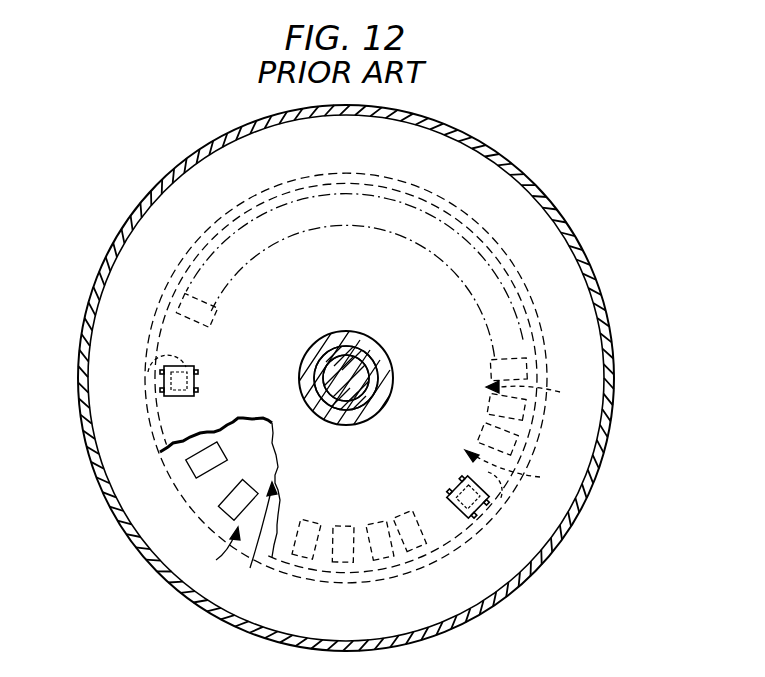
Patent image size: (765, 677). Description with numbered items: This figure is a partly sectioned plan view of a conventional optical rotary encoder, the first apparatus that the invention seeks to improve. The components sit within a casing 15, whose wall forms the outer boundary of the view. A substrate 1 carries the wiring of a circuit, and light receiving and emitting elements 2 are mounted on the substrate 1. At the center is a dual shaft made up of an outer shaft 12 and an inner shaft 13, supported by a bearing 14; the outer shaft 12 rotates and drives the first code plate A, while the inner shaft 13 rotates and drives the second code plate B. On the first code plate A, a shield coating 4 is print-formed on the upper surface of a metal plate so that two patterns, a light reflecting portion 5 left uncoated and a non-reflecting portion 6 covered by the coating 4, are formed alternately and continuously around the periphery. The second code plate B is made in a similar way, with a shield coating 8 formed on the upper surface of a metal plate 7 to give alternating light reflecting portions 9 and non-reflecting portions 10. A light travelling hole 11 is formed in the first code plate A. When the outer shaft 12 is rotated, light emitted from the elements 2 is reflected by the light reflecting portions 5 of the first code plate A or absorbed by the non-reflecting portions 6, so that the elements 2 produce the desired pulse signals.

The substrate 1 is at (592, 368).
The light receiving and emitting element 2 is at (163, 381).
The shield coating 4 is at (379, 358).
The light reflecting portion 5 is at (437, 548).
The non-reflecting portion 6 is at (525, 427).
The metal plate 7 is at (513, 321).
The shield coating 8 is at (220, 503).
The light reflecting portion 9 is at (230, 505).
The non-reflecting portion 10 is at (210, 485).
The light travelling hole 11 is at (157, 362).
The outer shaft 12 is at (347, 346).
The inner shaft 13 is at (356, 360).
The bearing 14 is at (338, 342).
The casing 15 is at (80, 366).
The first code plate A is at (533, 392).
The second code plate B is at (218, 551).